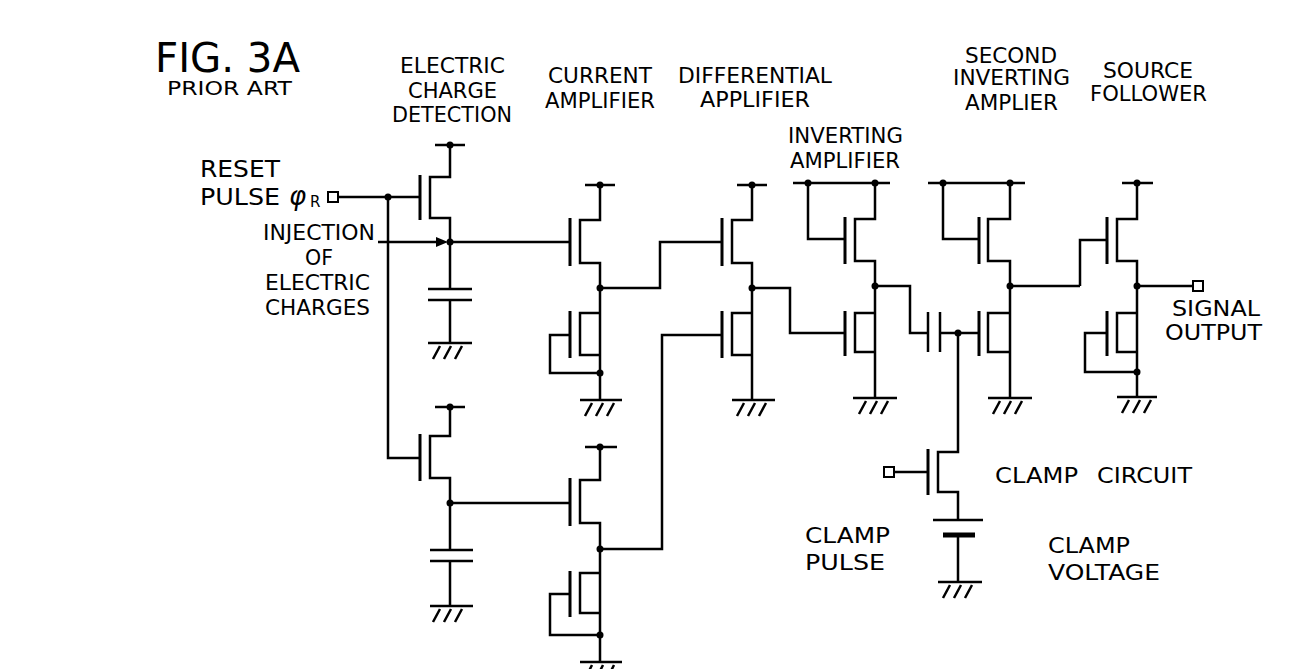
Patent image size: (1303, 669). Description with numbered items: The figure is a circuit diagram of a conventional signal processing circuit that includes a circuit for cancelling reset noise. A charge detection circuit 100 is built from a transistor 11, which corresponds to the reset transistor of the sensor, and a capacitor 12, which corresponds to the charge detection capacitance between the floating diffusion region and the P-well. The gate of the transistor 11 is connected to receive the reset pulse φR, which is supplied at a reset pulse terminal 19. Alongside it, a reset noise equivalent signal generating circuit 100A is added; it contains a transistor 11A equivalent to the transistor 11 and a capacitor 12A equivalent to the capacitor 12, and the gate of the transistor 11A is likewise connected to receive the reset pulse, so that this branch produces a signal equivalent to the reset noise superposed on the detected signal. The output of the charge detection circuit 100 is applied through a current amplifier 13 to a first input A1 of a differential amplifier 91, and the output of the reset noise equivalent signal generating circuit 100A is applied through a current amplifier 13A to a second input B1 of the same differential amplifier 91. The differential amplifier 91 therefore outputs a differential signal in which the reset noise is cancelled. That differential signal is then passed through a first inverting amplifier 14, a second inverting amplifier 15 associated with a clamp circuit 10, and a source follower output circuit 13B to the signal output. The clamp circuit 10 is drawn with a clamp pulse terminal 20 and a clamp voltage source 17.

The reset pulse terminal 19 is at (333, 190).
The charge detection circuit 100 is at (406, 182).
The transistor 11 is at (445, 209).
The capacitor 12 is at (465, 303).
The reset noise equivalent signal generating circuit 100A is at (426, 426).
The transistor 11A is at (445, 466).
The capacitor 12A is at (428, 556).
The current amplifier 13 is at (584, 173).
The current amplifier 13A is at (570, 470).
The first input A1 is at (688, 240).
The second input B1 is at (664, 490).
The differential amplifier 91 is at (783, 227).
The first inverting amplifier 14 is at (860, 255).
The second inverting amplifier 15 is at (1072, 122).
The source follower output circuit 13B is at (1208, 122).
The clamp circuit 10 is at (941, 426).
The clamp pulse terminal 20 is at (882, 478).
The clamp voltage source 17 is at (975, 540).